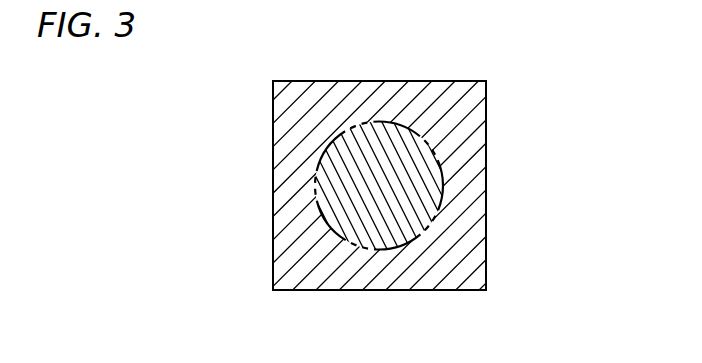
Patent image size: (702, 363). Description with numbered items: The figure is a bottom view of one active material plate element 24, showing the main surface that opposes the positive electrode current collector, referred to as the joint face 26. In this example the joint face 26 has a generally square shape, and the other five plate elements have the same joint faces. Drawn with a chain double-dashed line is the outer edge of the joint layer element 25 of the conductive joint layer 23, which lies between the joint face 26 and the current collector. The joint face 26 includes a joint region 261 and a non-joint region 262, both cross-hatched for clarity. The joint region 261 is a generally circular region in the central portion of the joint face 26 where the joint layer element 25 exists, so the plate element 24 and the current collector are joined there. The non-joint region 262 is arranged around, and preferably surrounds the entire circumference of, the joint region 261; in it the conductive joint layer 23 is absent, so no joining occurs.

The conductive joint layer 23 is at (548, 180).
The active material plate element 24 is at (278, 58).
The joint layer element 25 is at (447, 188).
The joint face 26 is at (448, 109).
The joint region 261 is at (339, 187).
The non-joint region 262 is at (309, 262).